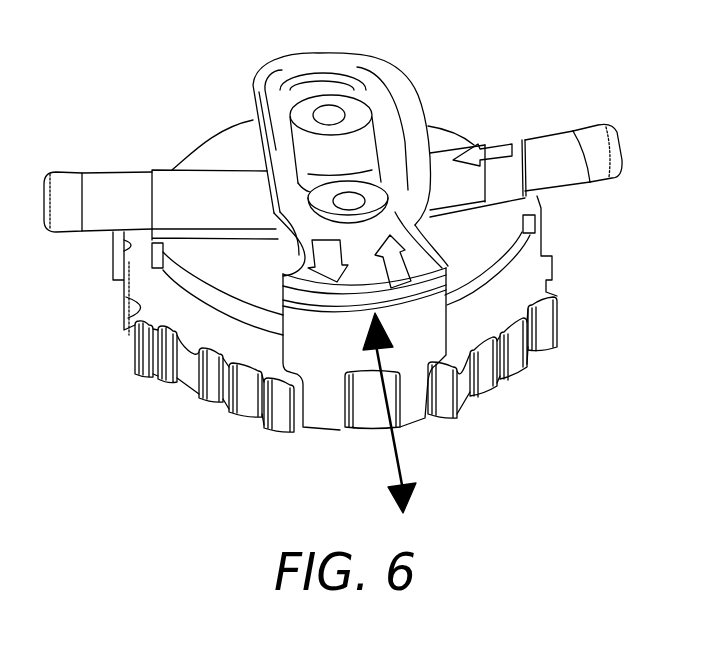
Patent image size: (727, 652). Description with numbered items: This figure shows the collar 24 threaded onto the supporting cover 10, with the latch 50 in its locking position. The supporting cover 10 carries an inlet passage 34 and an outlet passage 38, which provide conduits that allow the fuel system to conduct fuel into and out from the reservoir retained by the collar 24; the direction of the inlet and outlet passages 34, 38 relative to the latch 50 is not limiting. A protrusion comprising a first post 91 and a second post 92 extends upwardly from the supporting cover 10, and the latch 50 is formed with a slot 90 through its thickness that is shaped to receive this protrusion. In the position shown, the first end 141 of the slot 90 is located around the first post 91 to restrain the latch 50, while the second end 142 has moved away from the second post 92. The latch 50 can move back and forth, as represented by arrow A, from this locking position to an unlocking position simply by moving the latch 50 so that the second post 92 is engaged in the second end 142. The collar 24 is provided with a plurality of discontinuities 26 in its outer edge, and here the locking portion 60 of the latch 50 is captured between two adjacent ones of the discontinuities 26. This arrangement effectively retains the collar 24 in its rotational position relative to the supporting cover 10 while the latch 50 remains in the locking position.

The supporting cover 10 is at (225, 148).
The outlet passage 38 is at (103, 182).
The inlet passage 34 is at (548, 143).
The latch 50 is at (386, 78).
The second end 142 is at (337, 78).
The second post 92 is at (302, 104).
The slot 90 is at (376, 135).
The first post 91 is at (320, 200).
The first end 141 is at (408, 233).
The locking portion 60 is at (337, 343).
The collar 24 is at (520, 325).
The discontinuities 26 is at (560, 318).
The arrow A is at (398, 457).